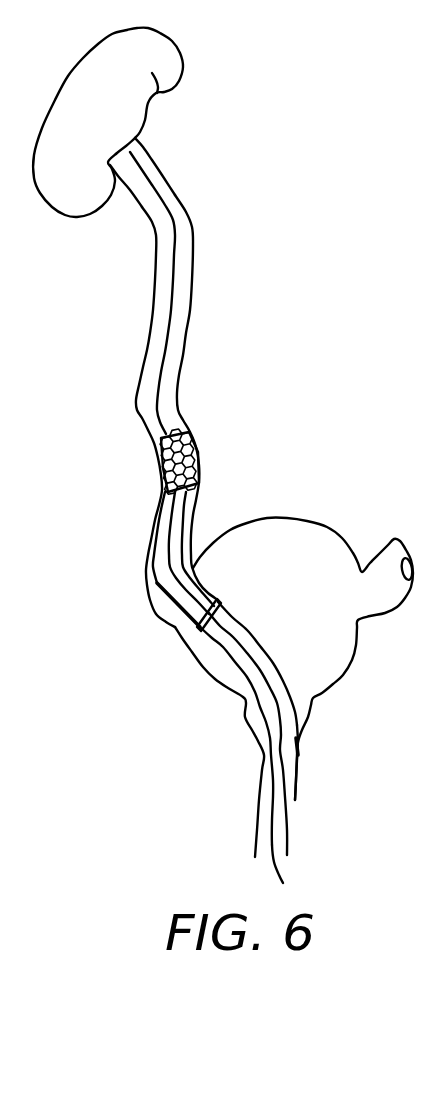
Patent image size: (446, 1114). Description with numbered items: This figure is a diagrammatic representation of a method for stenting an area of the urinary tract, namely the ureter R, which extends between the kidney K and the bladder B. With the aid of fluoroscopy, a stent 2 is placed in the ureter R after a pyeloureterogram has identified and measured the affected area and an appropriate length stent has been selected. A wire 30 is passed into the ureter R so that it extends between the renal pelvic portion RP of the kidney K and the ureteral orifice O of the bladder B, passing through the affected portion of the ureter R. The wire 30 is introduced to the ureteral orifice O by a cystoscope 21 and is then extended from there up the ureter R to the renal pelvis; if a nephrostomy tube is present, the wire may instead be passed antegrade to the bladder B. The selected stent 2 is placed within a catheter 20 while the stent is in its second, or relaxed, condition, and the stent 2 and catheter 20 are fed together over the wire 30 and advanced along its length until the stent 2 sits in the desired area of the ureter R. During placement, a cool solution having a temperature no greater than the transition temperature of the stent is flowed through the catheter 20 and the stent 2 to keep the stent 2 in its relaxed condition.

The kidney K is at (87, 52).
The renal pelvic portion RP is at (160, 149).
The ureter R is at (190, 207).
The wire 30 is at (175, 280).
The stent 2 is at (193, 440).
The bladder B is at (315, 522).
The catheter 20 is at (162, 578).
The ureteral orifice O is at (162, 617).
The cystoscope 21 is at (293, 798).